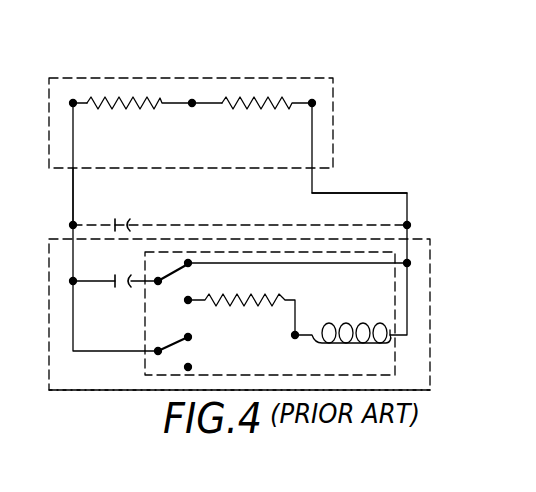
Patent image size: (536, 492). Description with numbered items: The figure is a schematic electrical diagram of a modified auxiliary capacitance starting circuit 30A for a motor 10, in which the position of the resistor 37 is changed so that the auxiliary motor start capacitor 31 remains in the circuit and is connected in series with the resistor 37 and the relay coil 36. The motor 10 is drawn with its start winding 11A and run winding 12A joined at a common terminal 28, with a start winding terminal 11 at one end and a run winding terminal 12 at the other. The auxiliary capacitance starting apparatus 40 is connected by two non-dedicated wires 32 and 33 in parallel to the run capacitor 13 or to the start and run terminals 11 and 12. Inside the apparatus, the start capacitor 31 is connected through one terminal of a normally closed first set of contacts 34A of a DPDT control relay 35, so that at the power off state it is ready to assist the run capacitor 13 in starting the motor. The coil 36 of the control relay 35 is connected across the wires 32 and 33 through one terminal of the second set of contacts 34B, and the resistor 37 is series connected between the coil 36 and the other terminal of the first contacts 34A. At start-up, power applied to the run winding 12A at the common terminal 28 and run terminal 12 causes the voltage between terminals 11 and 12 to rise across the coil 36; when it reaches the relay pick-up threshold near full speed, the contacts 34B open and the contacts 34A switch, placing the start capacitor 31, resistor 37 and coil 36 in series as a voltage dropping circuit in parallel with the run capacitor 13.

The motor 10 is at (339, 108).
The start winding terminal 11 is at (74, 100).
The start winding 11A is at (138, 102).
The common terminal 28 is at (192, 100).
The run winding 12A is at (267, 102).
The run winding terminal 12 is at (312, 100).
The wire 32 is at (73, 170).
The wire 33 is at (314, 192).
The auxiliary capacitance starting circuit 30A is at (46, 259).
The run capacitor 13 is at (119, 218).
The DPDT control relay 35 is at (220, 252).
The first set of contacts 34A is at (170, 271).
The auxiliary motor start capacitor 31 is at (122, 289).
The resistor 37 is at (242, 300).
The relay coil 36 is at (356, 322).
The second set of contacts 34B is at (175, 357).
The auxiliary capacitance starting apparatus 40 is at (112, 392).